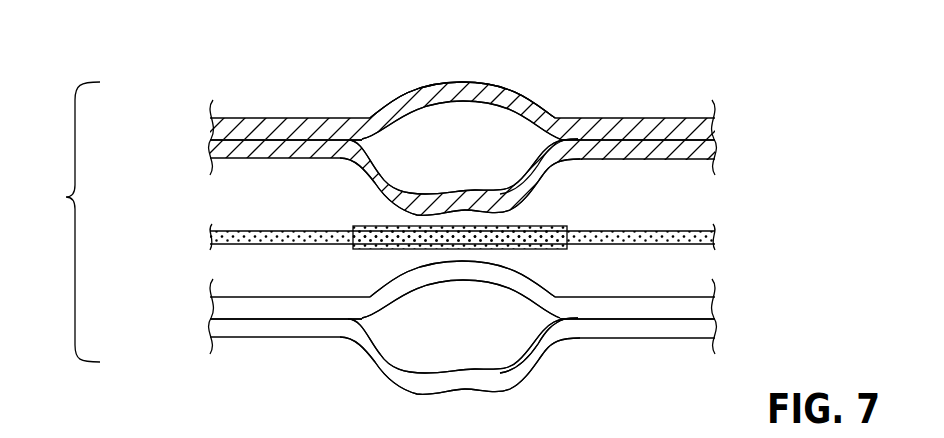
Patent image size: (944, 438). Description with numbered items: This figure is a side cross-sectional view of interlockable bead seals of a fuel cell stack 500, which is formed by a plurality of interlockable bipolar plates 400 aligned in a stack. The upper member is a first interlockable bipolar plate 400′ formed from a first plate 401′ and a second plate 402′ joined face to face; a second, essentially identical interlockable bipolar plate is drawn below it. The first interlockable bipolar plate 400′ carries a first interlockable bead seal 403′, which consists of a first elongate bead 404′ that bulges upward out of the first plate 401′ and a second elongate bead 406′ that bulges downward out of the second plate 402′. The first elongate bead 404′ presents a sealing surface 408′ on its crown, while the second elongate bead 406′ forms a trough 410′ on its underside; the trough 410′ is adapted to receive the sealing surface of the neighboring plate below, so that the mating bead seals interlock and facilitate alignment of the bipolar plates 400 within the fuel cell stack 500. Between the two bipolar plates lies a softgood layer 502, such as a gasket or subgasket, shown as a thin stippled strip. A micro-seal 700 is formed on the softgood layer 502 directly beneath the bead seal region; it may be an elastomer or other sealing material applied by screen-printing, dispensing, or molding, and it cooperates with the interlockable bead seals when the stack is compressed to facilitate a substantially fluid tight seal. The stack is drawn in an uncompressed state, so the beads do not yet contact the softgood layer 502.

The interlockable bipolar plates 400 is at (68, 197).
The first interlockable bipolar plate 400′ is at (212, 139).
The first plate 401′ is at (718, 126).
The second plate 402′ is at (717, 151).
The first interlockable bead seal 403′ is at (483, 75).
The first elongate bead 404′ is at (414, 94).
The second elongate bead 406′ is at (376, 184).
The sealing surface 408′ is at (462, 86).
The trough 410′ is at (462, 203).
The fuel cell stack 500 is at (573, 60).
The softgood layer 502 is at (718, 238).
The micro-seal 700 is at (553, 225).